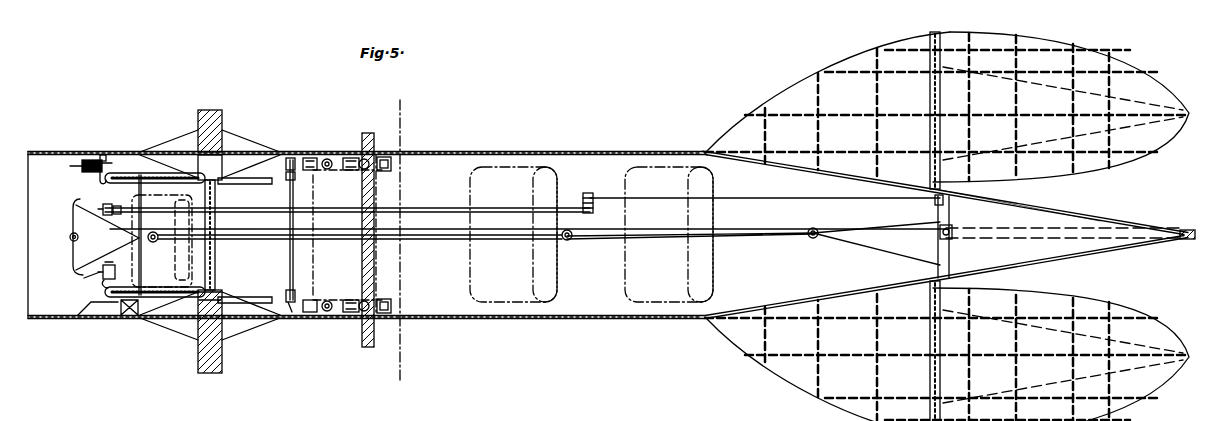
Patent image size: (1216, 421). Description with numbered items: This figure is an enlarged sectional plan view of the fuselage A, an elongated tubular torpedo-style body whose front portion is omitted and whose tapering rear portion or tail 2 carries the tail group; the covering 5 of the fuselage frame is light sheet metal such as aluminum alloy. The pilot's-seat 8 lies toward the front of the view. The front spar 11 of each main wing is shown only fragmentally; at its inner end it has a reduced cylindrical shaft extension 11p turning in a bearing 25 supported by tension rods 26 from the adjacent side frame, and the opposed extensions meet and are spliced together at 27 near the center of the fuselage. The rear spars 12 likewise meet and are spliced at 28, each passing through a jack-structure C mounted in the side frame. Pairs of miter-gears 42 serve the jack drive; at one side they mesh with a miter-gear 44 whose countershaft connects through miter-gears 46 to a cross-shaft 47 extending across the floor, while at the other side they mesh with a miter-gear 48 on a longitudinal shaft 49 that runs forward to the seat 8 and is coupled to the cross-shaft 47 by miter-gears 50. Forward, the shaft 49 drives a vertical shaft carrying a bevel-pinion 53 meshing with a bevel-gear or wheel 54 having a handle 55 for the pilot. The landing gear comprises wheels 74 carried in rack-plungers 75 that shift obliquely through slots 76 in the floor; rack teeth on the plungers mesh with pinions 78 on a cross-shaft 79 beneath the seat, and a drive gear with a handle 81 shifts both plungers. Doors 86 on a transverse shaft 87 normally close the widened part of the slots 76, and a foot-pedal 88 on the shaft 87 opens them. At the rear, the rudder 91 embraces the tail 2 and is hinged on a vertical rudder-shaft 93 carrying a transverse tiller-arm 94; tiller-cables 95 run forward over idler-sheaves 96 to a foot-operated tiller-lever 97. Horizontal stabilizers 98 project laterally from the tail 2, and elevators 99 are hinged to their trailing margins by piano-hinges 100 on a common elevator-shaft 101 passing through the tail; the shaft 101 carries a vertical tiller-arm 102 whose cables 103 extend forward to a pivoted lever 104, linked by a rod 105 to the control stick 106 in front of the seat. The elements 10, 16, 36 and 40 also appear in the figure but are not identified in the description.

The fuselage A is at (543, 152).
The jack-structure C is at (400, 153).
The tail 2 is at (1062, 213).
The covering 5 is at (707, 153).
The pilot's-seat 8 is at (205, 236).
The compartments 10 is at (620, 296).
The front spar 11 is at (222, 118).
The shaft extension 11p is at (215, 196).
The rear spar 12 is at (366, 348).
The section line 16 is at (397, 103).
The bearing 25 is at (205, 346).
The rods 26 is at (183, 138).
The splice 27 is at (216, 262).
The splice 28 is at (377, 200).
The bearing block 36 is at (384, 156).
The gear 40 is at (366, 156).
The miter-gears 42 is at (335, 156).
The miter-gear 44 is at (322, 312).
The miter-gears 46 is at (289, 313).
The cross-shaft 47 is at (289, 263).
The miter-gear 48 is at (320, 156).
The shaft 49 is at (298, 156).
The miter-gears 50 is at (296, 158).
The bevel-pinion 53 is at (102, 155).
The bevel-gear 54 is at (80, 168).
The handle 55 is at (98, 180).
The landing wheels 74 is at (120, 188).
The rack-plungers 75 is at (203, 200).
The slots 76 is at (121, 172).
The pinions 78 is at (133, 186).
The cross-shaft 79 is at (141, 262).
The handle 81 is at (104, 283).
The doors 86 is at (108, 315).
The transverse shaft 87 is at (84, 278).
The foot-pedal 88 is at (98, 270).
The rudder 91 is at (1186, 231).
The rudder-shaft 93 is at (953, 230).
The tiller-arm 94 is at (953, 252).
The tiller-cables 95 is at (592, 236).
The idler-sheaves 96 is at (155, 233).
The tiller-lever 97 is at (72, 257).
The horizontal stabilizers 98 is at (828, 60).
The elevators 99 is at (972, 35).
The piano-hinges 100 is at (945, 102).
The elevator-shaft 101 is at (936, 265).
The vertical tiller-arm 102 is at (934, 202).
The cables 103 is at (780, 198).
The pivoted lever 104 is at (586, 193).
The rod 105 is at (455, 208).
The control lever 106 is at (107, 237).